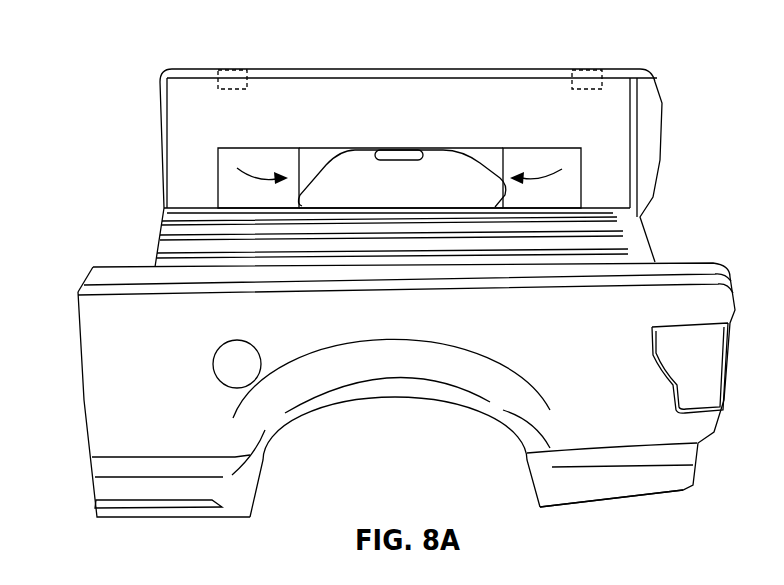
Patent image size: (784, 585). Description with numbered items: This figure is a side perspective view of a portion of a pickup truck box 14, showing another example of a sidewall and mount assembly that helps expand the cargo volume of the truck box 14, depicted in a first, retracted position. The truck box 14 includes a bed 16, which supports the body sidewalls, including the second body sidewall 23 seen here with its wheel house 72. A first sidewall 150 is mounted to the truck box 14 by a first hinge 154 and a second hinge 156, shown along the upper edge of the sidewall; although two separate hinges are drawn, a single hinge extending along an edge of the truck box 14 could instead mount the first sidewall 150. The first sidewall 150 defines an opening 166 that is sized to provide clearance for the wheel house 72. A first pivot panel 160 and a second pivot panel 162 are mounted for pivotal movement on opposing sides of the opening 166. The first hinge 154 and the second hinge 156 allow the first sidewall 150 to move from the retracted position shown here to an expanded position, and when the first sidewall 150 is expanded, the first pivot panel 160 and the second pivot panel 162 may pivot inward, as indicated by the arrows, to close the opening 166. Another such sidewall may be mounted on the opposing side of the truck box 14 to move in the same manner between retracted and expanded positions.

The truck box 14 is at (95, 522).
The bed 16 is at (627, 238).
The second body sidewall 23 is at (618, 433).
The wheel house 72 is at (401, 116).
The first sidewall 150 is at (183, 93).
The first hinge 154 is at (230, 72).
The second hinge 156 is at (587, 72).
The first pivot panel 160 is at (228, 162).
The second pivot panel 162 is at (568, 162).
The opening 166 is at (460, 148).